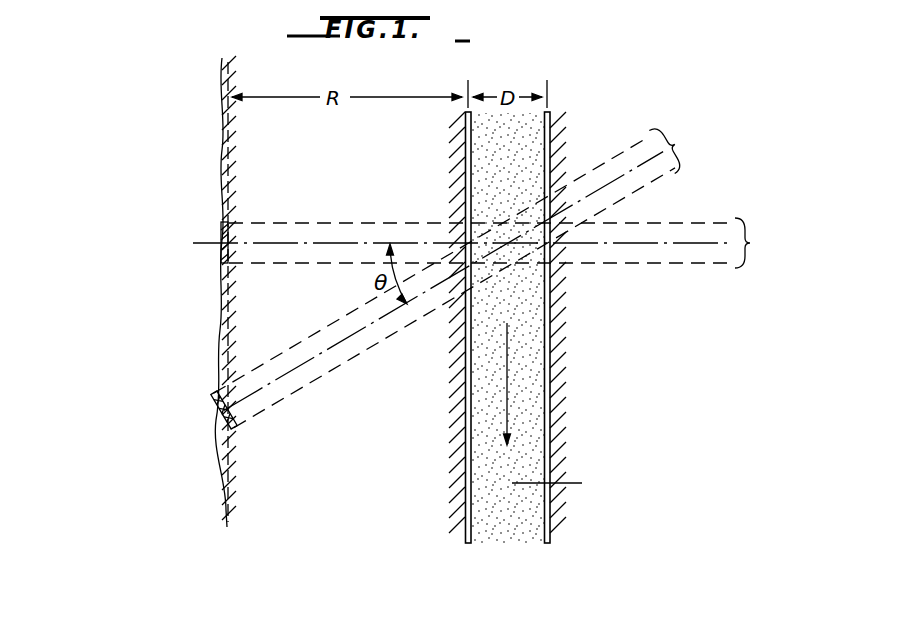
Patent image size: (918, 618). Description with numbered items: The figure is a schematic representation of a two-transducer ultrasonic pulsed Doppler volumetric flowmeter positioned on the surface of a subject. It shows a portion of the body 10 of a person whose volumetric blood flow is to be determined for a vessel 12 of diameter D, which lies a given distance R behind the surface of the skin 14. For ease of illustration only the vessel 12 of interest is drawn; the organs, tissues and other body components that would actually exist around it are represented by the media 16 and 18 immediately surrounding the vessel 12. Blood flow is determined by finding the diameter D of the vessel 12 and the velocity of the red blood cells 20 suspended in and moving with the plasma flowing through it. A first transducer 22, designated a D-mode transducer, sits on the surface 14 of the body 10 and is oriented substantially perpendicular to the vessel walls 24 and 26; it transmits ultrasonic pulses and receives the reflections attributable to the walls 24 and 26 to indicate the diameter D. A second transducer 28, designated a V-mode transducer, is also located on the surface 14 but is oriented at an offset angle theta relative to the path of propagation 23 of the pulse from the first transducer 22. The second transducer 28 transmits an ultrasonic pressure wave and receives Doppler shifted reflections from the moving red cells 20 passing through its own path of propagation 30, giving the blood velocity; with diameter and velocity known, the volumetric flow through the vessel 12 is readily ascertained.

The body 10 is at (200, 130).
The vessel 12 is at (488, 327).
The skin surface 14 is at (222, 97).
The medium 16 is at (372, 437).
The medium 18 is at (657, 424).
The red blood cells 20 is at (523, 307).
The first transducer 22 is at (221, 232).
The path of propagation 23 is at (485, 243).
The vessel wall 24 is at (464, 126).
The vessel wall 26 is at (574, 327).
The second transducer 28 is at (228, 384).
The path of propagation 30 is at (465, 275).